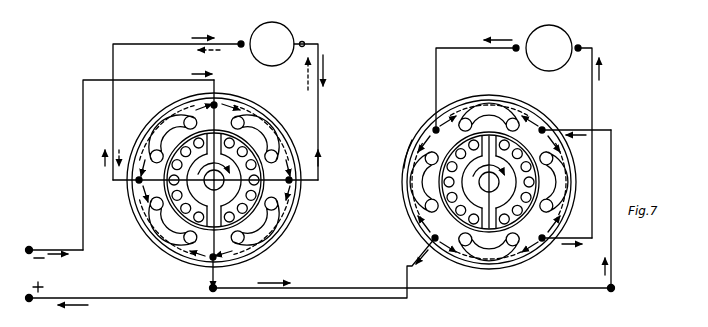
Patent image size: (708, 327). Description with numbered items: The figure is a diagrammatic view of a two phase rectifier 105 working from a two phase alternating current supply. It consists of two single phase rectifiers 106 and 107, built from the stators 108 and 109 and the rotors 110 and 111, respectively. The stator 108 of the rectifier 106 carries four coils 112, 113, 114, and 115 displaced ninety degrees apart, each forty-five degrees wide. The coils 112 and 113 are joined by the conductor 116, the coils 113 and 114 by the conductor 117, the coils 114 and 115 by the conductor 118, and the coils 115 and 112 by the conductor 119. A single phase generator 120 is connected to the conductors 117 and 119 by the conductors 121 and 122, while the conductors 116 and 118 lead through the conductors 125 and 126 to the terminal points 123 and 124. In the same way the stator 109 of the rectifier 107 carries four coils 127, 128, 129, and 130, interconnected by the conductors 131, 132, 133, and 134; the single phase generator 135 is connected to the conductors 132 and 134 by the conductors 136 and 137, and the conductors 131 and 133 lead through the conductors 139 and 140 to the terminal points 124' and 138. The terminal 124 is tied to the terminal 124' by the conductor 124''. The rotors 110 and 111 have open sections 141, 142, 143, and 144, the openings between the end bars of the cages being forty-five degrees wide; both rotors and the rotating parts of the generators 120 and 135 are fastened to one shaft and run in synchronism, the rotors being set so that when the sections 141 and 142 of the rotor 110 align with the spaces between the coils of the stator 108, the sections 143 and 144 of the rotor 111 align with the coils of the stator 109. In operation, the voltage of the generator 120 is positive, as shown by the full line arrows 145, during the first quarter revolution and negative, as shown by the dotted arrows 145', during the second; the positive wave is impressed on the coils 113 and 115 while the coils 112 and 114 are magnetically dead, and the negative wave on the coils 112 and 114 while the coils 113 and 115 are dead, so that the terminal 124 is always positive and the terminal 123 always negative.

The two phase rectifier 105 is at (410, 226).
The single phase rectifier 106 is at (148, 125).
The single phase rectifier 107 is at (408, 158).
The stator 108 is at (273, 130).
The stator 109 is at (424, 118).
The rotor 110 is at (214, 180).
The rotor 111 is at (489, 182).
The coil 112 is at (172, 120).
The coil 113 is at (258, 124).
The coil 114 is at (275, 221).
The coil 115 is at (173, 240).
The conductor 116 is at (220, 100).
The conductor 117 is at (298, 192).
The conductor 118 is at (225, 261).
The conductor 119 is at (131, 196).
The single phase generator 120 is at (280, 23).
The conductor 121 is at (319, 106).
The conductor 122 is at (163, 44).
The terminal point 123 is at (30, 246).
The terminal point 124 is at (193, 287).
The terminal point 124' is at (637, 289).
The conductor 124'' is at (412, 297).
The conductor 125 is at (84, 231).
The conductor 126 is at (217, 276).
The coil 127 is at (500, 112).
The coil 128 is at (559, 205).
The coil 129 is at (505, 255).
The coil 130 is at (415, 190).
The conductor 131 is at (545, 127).
The conductor 132 is at (556, 250).
The conductor 133 is at (432, 232).
The conductor 134 is at (426, 132).
The single phase generator 135 is at (568, 33).
The conductor 136 is at (593, 100).
The conductor 137 is at (437, 72).
The terminal point 138 is at (31, 302).
The conductor 139 is at (612, 254).
The conductor 140 is at (408, 278).
The open section 141 is at (219, 144).
The open section 142 is at (219, 216).
The open section 143 is at (494, 146).
The open section 144 is at (494, 218).
The arrows 145 is at (343, 68).
The arrows 145' is at (293, 74).